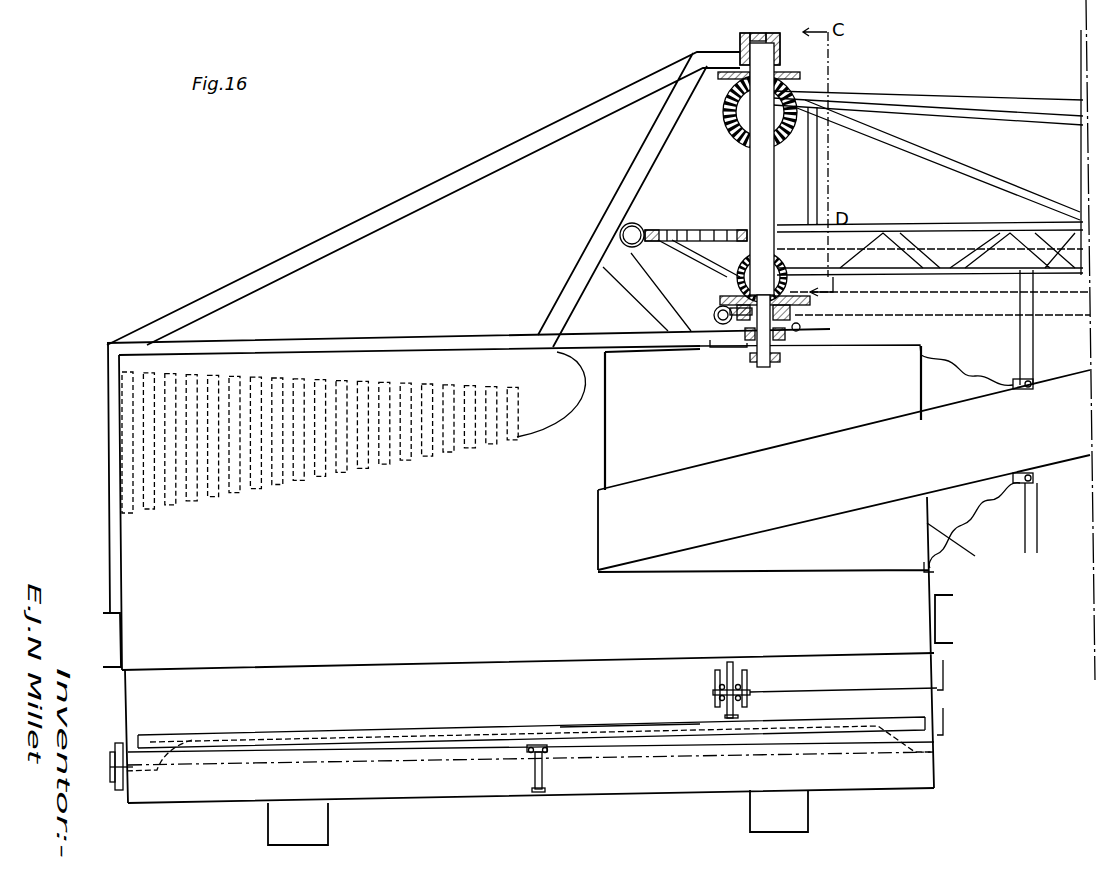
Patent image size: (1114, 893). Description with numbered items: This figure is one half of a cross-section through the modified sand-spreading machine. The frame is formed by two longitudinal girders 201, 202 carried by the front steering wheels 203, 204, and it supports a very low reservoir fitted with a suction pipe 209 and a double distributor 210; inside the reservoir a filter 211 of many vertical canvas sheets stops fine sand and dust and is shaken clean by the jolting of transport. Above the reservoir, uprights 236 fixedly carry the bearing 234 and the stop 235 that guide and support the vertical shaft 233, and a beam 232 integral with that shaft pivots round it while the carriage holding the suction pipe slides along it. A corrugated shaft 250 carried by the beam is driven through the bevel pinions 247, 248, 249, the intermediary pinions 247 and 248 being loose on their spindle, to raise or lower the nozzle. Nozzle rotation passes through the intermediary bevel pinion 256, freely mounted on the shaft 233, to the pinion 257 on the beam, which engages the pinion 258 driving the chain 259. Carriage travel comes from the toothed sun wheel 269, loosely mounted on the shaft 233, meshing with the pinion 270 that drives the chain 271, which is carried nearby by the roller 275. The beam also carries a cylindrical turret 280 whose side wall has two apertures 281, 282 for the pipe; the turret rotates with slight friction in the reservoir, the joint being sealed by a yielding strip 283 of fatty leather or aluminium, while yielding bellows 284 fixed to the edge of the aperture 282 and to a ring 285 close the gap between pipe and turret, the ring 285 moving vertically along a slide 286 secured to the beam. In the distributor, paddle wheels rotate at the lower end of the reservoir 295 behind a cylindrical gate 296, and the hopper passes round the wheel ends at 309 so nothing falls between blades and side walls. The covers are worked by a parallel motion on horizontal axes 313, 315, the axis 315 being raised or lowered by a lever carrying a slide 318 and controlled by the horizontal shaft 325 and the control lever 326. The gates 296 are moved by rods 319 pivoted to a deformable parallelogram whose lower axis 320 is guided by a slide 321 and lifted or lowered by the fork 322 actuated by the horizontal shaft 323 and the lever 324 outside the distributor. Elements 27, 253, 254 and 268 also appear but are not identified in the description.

The housing 27 is at (160, 592).
The longitudinal girder 201 is at (118, 634).
The longitudinal girder 202 is at (953, 620).
The front steering wheel 203 is at (278, 816).
The front steering wheel 204 is at (762, 806).
The suction pipe 209 is at (1043, 446).
The distributor 210 is at (137, 693).
The filter 211 is at (140, 438).
The beam 232 is at (940, 232).
The vertical shaft 233 is at (762, 190).
The bearing 234 is at (780, 340).
The stop 235 is at (745, 42).
The uprights 236 is at (667, 125).
The bevel pinion 247 is at (793, 72).
The bevel pinion 248 is at (740, 104).
The bevel pinion 249 is at (805, 96).
The corrugated shaft 250 is at (1023, 105).
The roller 253 is at (628, 232).
The shaft 254 is at (666, 228).
The bevel pinion 256 is at (727, 297).
The bevel pinion 257 is at (744, 265).
The pinion 258 is at (750, 258).
The chain 259 is at (955, 302).
The roller 268 is at (714, 317).
The toothed sun wheel 269 is at (841, 289).
The pinion 270 is at (748, 338).
The chain 271 is at (983, 318).
The roller 275 is at (800, 331).
The cylindrical turret 280 is at (810, 338).
The aperture 281 is at (605, 452).
The aperture 282 is at (964, 543).
The yielding strip 283 is at (935, 570).
The yielding bellows 284 is at (980, 517).
The ring 285 is at (1032, 380).
The slide 286 is at (1027, 338).
The reservoir 295 is at (283, 738).
The cylindrical gate 296 is at (615, 727).
The hopper 309 is at (160, 772).
The horizontal axis 313 is at (536, 791).
The horizontal axis 315 is at (544, 746).
The slide 318 is at (530, 746).
The rods 319 is at (726, 717).
The lower axis 320 is at (714, 691).
The slide 321 is at (718, 673).
The fork 322 is at (745, 680).
The horizontal shaft 323 is at (798, 690).
The lever 324 is at (944, 681).
The horizontal shaft 325 is at (647, 751).
The control lever 326 is at (945, 729).